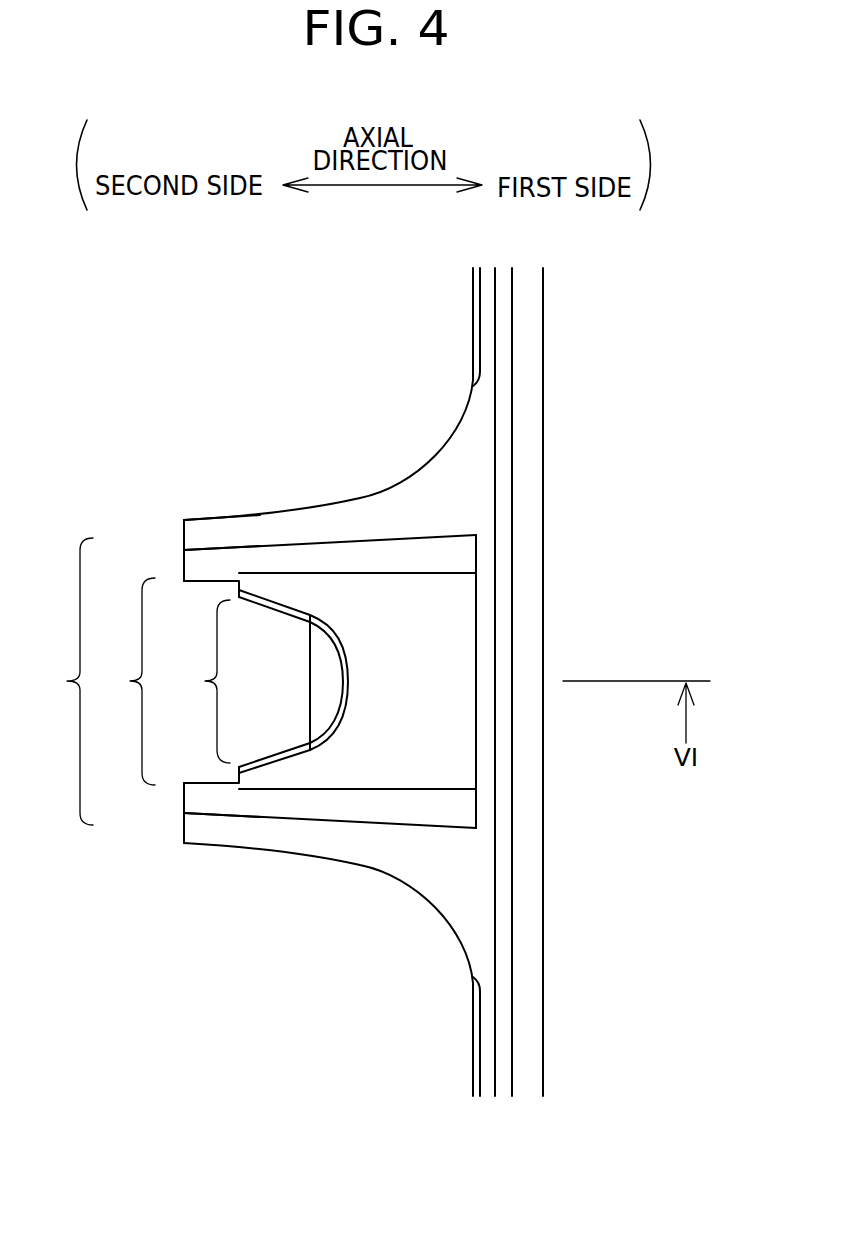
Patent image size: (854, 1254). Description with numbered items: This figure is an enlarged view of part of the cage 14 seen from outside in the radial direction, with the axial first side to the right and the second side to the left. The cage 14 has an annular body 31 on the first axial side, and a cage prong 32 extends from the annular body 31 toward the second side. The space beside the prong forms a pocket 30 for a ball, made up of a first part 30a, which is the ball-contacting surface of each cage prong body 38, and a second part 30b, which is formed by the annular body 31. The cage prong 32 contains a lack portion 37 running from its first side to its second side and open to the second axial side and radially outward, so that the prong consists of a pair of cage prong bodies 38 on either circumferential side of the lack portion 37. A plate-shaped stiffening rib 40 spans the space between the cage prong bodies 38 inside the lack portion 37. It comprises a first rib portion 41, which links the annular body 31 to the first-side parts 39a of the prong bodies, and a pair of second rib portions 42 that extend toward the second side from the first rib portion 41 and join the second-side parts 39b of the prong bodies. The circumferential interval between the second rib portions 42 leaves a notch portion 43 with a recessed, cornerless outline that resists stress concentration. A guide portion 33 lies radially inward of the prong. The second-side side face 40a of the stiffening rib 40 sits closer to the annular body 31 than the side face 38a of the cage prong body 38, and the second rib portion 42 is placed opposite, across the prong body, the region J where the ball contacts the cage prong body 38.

The cage 14 is at (562, 373).
The pocket 30 is at (332, 682).
The first part of the pocket 30a is at (321, 865).
The second part of the pocket 30b is at (473, 1052).
The annular body 31 is at (505, 722).
The cage prong 32 is at (326, 677).
The guide portion 33 is at (328, 662).
The lack portion 37 is at (351, 681).
The cage prong body 38 is at (198, 797).
The side face of the cage prong body 38a is at (183, 825).
The part of the cage prong body on the first side 39a is at (443, 827).
The part of the cage prong body on the second side 39b is at (254, 803).
The stiffening rib 40 is at (379, 681).
The side face of the stiffening rib 40a is at (238, 777).
The first rib portion 41 is at (443, 648).
The second rib portion 42 is at (290, 775).
The notch portion 43 is at (379, 675).
The region of ball contact J is at (247, 494).